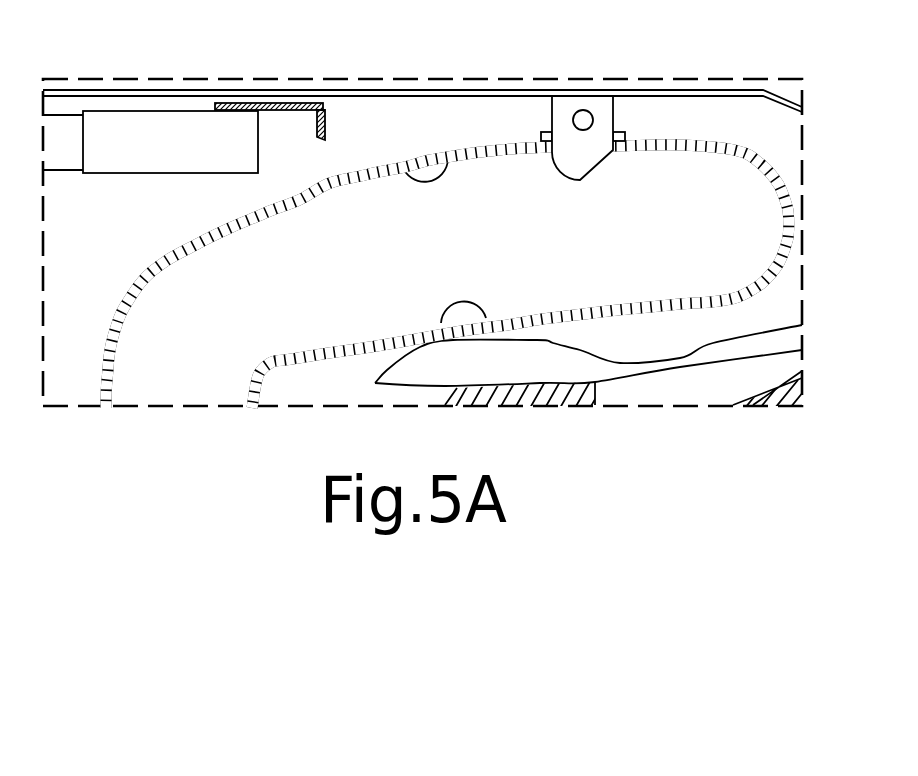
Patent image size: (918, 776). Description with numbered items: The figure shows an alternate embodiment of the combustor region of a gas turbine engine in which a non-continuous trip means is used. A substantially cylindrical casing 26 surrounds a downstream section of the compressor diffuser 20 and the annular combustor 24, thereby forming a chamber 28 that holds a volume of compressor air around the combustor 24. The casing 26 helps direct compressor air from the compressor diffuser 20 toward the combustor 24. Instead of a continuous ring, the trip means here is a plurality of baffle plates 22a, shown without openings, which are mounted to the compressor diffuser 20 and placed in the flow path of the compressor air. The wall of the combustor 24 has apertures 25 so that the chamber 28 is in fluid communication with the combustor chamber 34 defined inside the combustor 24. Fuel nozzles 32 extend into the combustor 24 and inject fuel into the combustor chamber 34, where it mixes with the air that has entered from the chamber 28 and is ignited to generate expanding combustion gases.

The compressor diffuser 20 is at (174, 126).
The baffle plates 22a is at (298, 103).
The combustor 24 is at (772, 167).
The apertures 25 is at (458, 302).
The casing 26 is at (455, 90).
The chamber 28 is at (95, 332).
The fuel nozzles 32 is at (580, 183).
The combustor chamber 34 is at (262, 317).